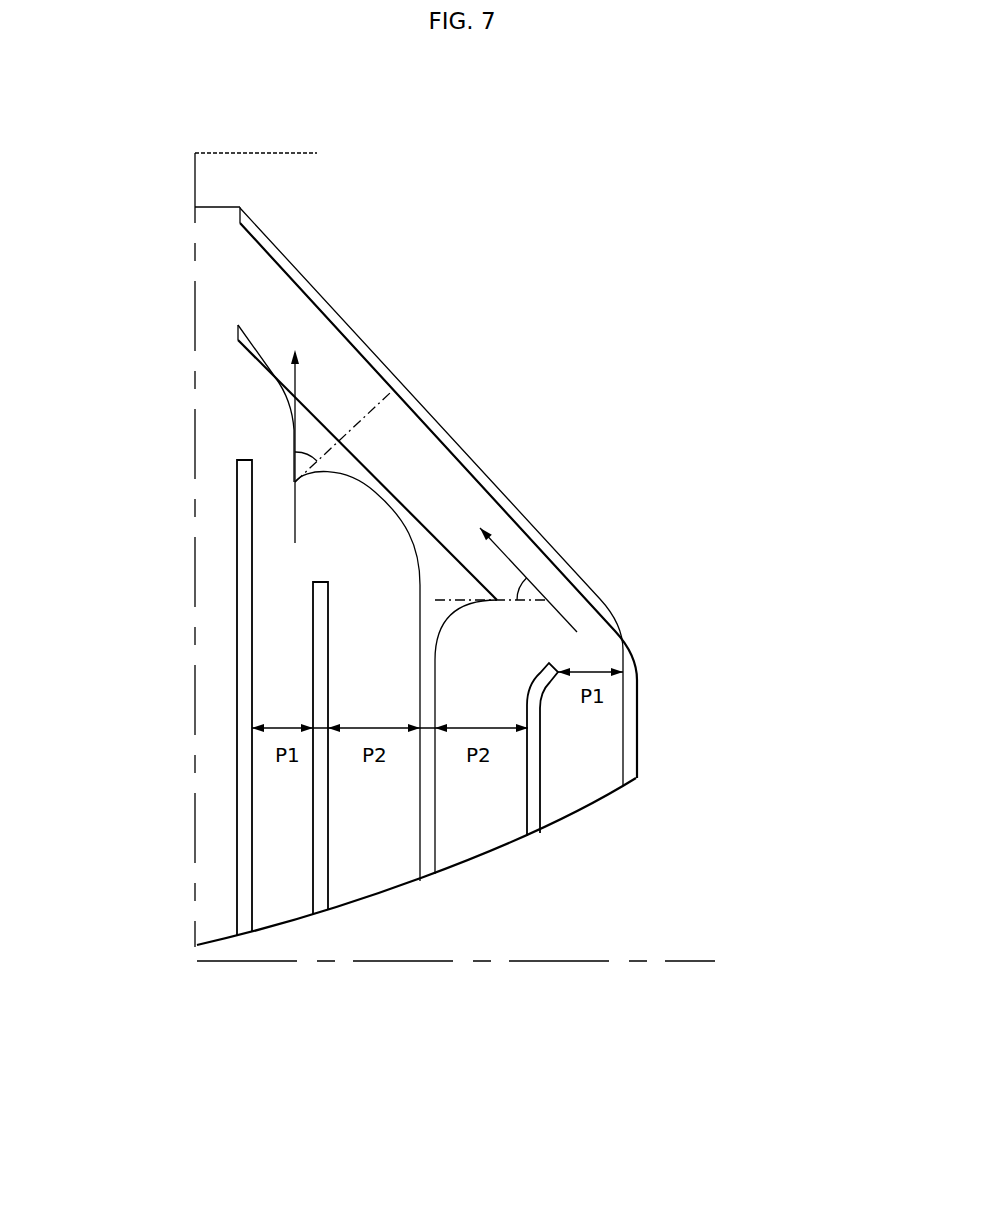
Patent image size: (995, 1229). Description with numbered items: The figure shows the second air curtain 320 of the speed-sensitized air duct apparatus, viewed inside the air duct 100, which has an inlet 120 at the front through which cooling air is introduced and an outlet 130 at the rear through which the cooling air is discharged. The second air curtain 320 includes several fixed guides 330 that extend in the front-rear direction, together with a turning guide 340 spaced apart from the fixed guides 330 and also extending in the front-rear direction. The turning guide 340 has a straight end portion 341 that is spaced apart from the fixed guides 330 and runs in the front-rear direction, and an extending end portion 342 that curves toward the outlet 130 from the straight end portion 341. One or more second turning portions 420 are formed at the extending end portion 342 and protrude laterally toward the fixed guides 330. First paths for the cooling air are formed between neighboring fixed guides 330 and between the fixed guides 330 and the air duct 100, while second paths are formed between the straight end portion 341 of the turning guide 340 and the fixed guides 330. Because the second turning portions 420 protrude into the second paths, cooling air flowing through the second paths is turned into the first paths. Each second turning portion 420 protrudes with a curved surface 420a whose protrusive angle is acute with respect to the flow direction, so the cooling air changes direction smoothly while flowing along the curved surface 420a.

The air duct 100 is at (333, 300).
The inlet 120 is at (383, 858).
The outlet 130 is at (218, 225).
The second air curtain 320 is at (383, 458).
The fixed guide 330 is at (327, 837).
The turning guide 340 is at (626, 685).
The straight end portion 341 is at (435, 792).
The extending end portion 342 is at (393, 497).
The second turning portion 420 is at (442, 580).
The curved surface 420a is at (298, 478).